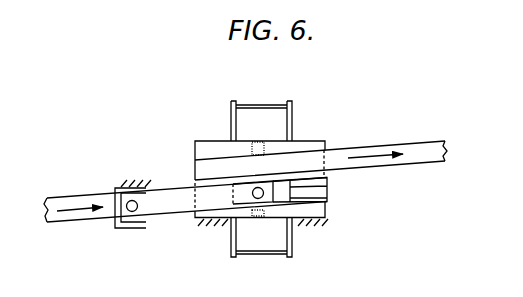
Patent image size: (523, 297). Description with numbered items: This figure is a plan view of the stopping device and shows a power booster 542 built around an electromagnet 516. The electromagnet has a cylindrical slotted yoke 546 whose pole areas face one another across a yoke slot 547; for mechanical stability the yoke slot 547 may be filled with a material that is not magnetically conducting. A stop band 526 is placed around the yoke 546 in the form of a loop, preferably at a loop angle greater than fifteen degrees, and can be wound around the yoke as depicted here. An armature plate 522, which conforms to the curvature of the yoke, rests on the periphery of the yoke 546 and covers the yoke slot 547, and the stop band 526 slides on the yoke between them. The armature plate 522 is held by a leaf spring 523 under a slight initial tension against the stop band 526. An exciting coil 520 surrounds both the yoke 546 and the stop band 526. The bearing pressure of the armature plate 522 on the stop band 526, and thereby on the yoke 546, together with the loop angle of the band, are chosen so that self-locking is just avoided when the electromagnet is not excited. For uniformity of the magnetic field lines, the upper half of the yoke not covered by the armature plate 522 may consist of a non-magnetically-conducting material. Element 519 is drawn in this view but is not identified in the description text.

The electromagnet 516 is at (296, 96).
The input bar 519 is at (74, 192).
The exciting coil 520 is at (248, 110).
The armature plate 522 is at (287, 192).
The leaf spring 523 is at (178, 208).
The stop band 526 is at (82, 213).
The power booster 542 is at (182, 135).
The cylindrical slotted yoke 546 is at (325, 209).
The yoke slot 547 is at (258, 141).